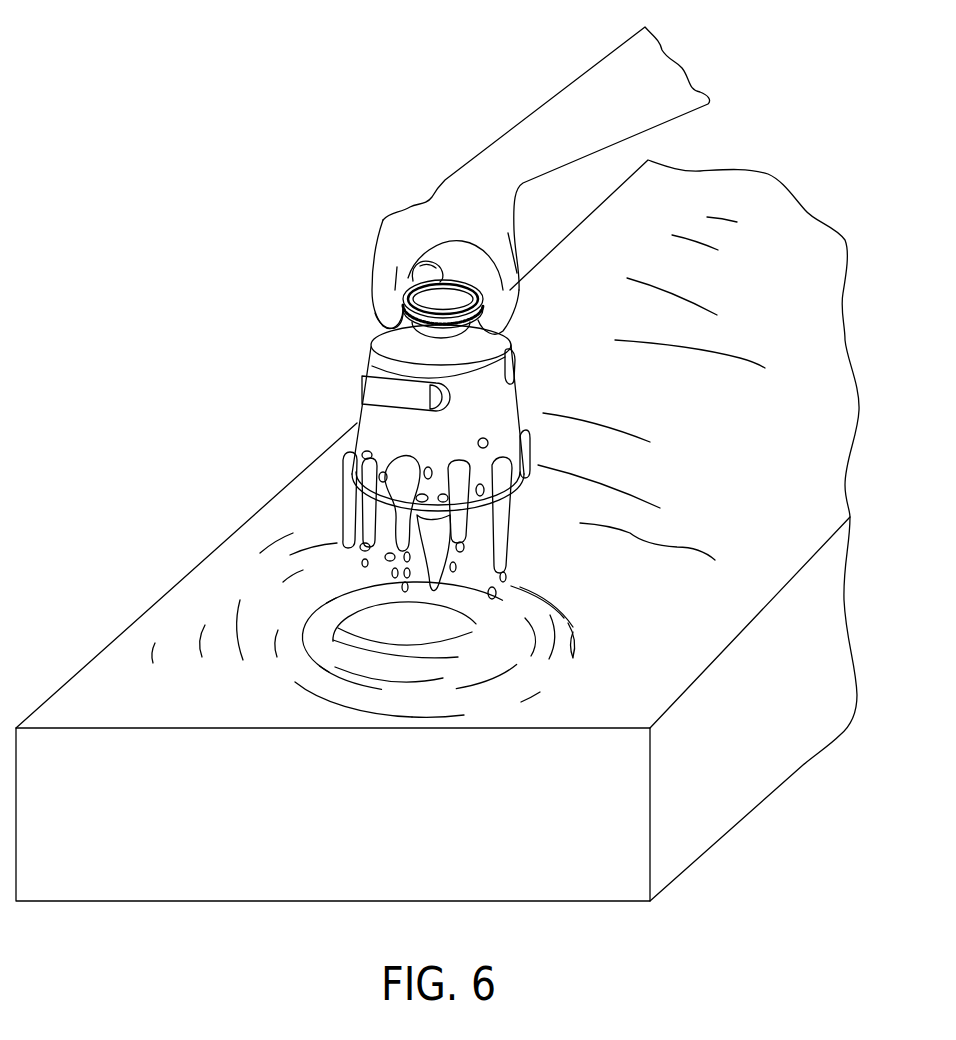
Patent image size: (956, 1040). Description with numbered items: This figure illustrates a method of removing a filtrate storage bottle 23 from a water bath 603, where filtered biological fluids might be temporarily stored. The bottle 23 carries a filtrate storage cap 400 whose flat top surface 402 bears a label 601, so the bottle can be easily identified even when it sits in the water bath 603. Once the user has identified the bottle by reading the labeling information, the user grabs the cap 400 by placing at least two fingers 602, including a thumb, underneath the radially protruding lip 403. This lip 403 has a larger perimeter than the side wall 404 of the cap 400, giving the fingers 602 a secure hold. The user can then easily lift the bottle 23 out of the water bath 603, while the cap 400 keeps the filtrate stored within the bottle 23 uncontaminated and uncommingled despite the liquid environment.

The filtrate storage bottle 23 is at (368, 405).
The cap 400 is at (410, 276).
The flat top surface 402 is at (498, 293).
The radially protruding lip 403 is at (478, 300).
The side wall 404 is at (440, 329).
The label 601 is at (450, 289).
The fingers 602 is at (374, 287).
The water bath 603 is at (267, 522).